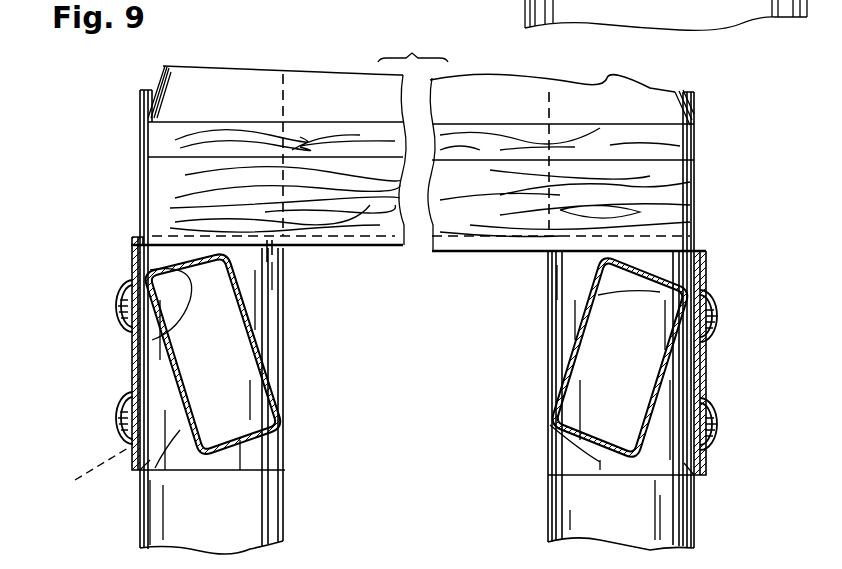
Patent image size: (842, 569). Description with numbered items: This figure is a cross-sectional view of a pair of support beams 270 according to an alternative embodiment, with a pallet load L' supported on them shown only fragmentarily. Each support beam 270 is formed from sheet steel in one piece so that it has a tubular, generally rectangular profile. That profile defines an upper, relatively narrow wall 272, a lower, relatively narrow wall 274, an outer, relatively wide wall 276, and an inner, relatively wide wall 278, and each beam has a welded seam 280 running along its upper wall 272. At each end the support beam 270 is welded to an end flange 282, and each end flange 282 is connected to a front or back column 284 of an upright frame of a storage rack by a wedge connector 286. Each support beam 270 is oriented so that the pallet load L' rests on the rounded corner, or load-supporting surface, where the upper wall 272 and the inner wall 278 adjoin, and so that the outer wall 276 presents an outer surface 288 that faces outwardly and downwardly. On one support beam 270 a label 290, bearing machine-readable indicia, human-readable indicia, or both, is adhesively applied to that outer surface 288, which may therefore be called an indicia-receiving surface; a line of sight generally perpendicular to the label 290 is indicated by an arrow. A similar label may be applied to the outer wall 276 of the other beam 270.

The pallet load L' is at (379, 158).
The support beam 270 is at (270, 339).
The upper wall 272 is at (134, 246).
The lower wall 274 is at (592, 440).
The outer wall 276 is at (168, 355).
The inner wall 278 is at (572, 388).
The welded seam 280 is at (150, 334).
The end flange 282 is at (268, 273).
The column 284 is at (278, 500).
The wedge connector 286 is at (122, 292).
The outer surface 288 is at (150, 472).
The label 290 is at (175, 424).